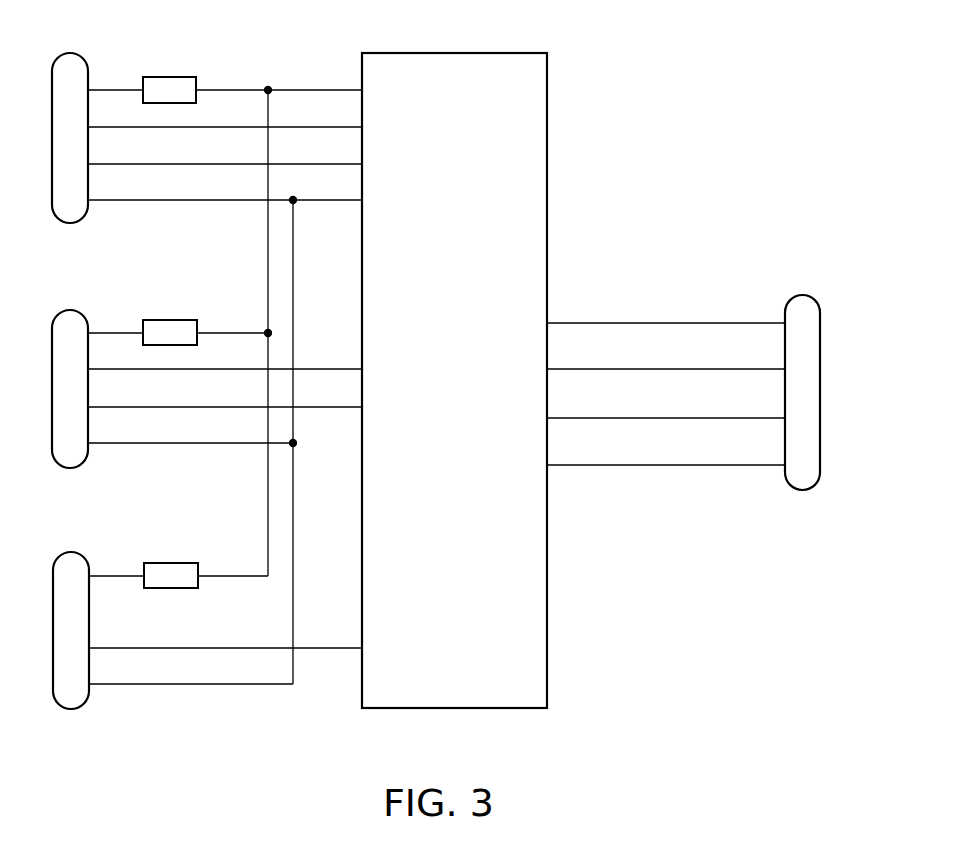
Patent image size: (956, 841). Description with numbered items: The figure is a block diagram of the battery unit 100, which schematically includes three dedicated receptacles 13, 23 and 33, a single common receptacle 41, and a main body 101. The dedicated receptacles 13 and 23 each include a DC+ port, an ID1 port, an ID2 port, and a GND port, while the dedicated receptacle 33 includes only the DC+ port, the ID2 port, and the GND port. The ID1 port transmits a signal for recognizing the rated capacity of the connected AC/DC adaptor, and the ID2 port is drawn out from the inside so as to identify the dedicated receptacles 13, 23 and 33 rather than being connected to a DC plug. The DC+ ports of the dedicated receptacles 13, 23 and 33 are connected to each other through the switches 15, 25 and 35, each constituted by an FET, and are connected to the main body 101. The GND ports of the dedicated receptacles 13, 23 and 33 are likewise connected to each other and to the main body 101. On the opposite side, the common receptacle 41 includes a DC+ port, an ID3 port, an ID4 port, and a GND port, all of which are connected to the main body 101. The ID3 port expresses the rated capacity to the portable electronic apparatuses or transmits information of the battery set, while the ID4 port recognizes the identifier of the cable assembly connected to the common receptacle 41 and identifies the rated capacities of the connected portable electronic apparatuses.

The battery unit 100 is at (677, 96).
The main body 101 is at (512, 53).
The dedicated receptacle 13 is at (72, 53).
The switch 15 is at (185, 77).
The dedicated receptacle 23 is at (72, 310).
The switch 25 is at (185, 320).
The dedicated receptacle 33 is at (73, 552).
The switch 35 is at (186, 563).
The common receptacle 41 is at (800, 295).